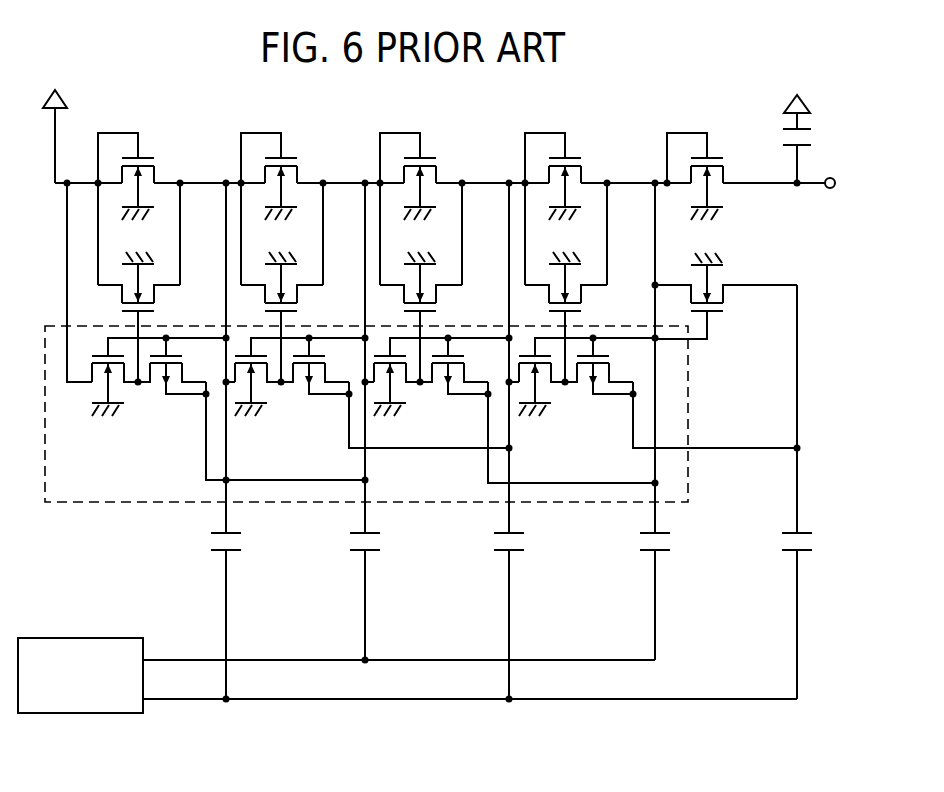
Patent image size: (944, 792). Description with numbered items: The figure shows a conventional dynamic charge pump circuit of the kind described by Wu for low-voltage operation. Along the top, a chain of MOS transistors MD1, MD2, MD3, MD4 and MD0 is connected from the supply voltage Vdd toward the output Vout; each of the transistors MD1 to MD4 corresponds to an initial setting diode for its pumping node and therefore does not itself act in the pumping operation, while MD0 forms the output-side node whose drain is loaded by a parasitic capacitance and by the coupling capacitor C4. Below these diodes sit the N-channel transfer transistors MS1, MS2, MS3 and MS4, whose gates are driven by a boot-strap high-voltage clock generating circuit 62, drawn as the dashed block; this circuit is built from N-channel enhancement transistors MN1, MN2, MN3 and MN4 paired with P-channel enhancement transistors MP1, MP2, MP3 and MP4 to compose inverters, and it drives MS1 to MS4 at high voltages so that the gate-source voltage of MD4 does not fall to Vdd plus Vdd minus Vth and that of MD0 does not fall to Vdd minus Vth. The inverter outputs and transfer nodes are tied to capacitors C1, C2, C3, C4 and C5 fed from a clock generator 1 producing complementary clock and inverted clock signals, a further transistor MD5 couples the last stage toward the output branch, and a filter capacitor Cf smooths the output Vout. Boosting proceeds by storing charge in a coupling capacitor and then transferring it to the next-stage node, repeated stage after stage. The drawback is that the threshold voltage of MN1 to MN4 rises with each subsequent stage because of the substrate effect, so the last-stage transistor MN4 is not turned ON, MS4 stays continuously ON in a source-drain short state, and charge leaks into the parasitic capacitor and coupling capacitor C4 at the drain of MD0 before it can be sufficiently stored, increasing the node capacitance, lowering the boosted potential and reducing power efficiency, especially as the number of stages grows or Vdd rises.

The high-voltage clock generating circuit 62 is at (688, 432).
The clock generator 1 is at (88, 713).
The MOS transistor MD1 is at (142, 209).
The MOS transistor MD2 is at (285, 209).
The MOS transistor MD3 is at (424, 209).
The MOS transistor MD4 is at (569, 209).
The MOS transistor MD0 is at (708, 176).
The transistor MD5 is at (726, 296).
The MOS transistor MS1 is at (147, 319).
The MOS transistor MS2 is at (290, 319).
The MOS transistor MS3 is at (429, 319).
The MOS transistor MS4 is at (574, 319).
The N-channel enhancement transistor MN1 is at (116, 314).
The N-channel enhancement transistor MN2 is at (267, 392).
The N-channel enhancement transistor MN3 is at (406, 392).
The N-channel enhancement transistor MN4 is at (551, 392).
The P-channel enhancement transistor MP1 is at (251, 408).
The P-channel enhancement transistor MP2 is at (395, 392).
The P-channel enhancement transistor MP3 is at (537, 409).
The P-channel enhancement transistor MP4 is at (681, 392).
The capacitor C1 is at (215, 441).
The capacitor C2 is at (356, 421).
The capacitor C3 is at (497, 441).
The coupling capacitor C4 is at (643, 421).
The capacitor C5 is at (809, 492).
The output capacitor Cf is at (807, 139).
The supply voltage Vdd is at (74, 136).
The output voltage Vout is at (852, 186).